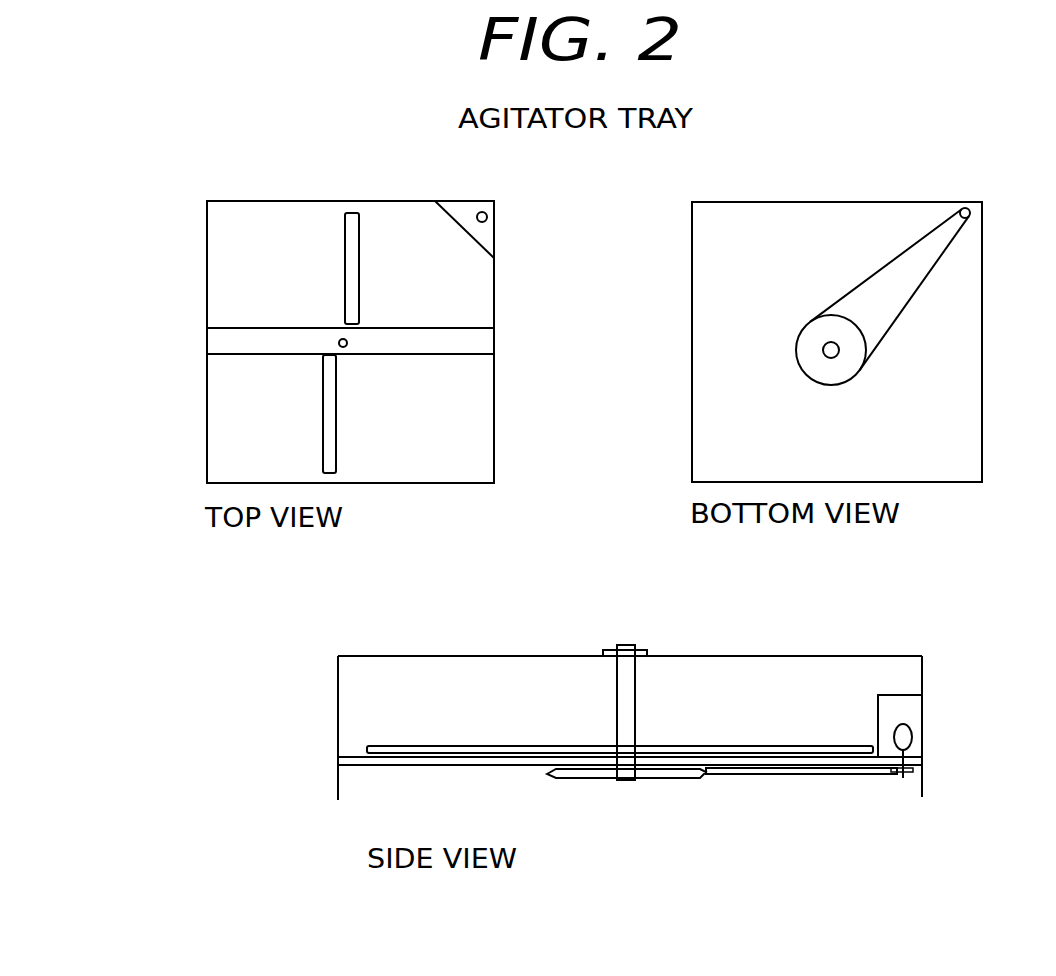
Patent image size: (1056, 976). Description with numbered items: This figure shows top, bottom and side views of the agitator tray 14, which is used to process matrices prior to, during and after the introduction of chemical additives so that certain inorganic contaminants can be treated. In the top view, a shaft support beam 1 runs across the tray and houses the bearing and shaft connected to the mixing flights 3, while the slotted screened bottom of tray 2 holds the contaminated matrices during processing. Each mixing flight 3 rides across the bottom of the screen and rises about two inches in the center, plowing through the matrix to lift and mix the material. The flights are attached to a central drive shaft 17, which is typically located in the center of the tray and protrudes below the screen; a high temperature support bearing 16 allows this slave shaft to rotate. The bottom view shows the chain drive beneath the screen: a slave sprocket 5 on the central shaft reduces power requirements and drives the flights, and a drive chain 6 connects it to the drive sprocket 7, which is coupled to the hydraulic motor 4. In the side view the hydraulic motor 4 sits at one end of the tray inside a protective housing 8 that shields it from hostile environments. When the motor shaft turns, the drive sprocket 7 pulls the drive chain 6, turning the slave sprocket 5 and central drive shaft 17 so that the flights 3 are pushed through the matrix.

The shaft support beam 1 is at (207, 333).
The slotted screened bottom of tray 2 is at (227, 396).
The mixing flight 3 is at (334, 443).
The hydraulic motor 4 is at (497, 215).
The slave sprocket 5 is at (814, 311).
The drive chain 6 is at (937, 262).
The drive sprocket 7 is at (964, 208).
The protective housing 8 is at (912, 694).
The agitator tray 14 is at (338, 706).
The high temperature support bearing 16 is at (640, 645).
The central drive shaft 17 is at (622, 645).